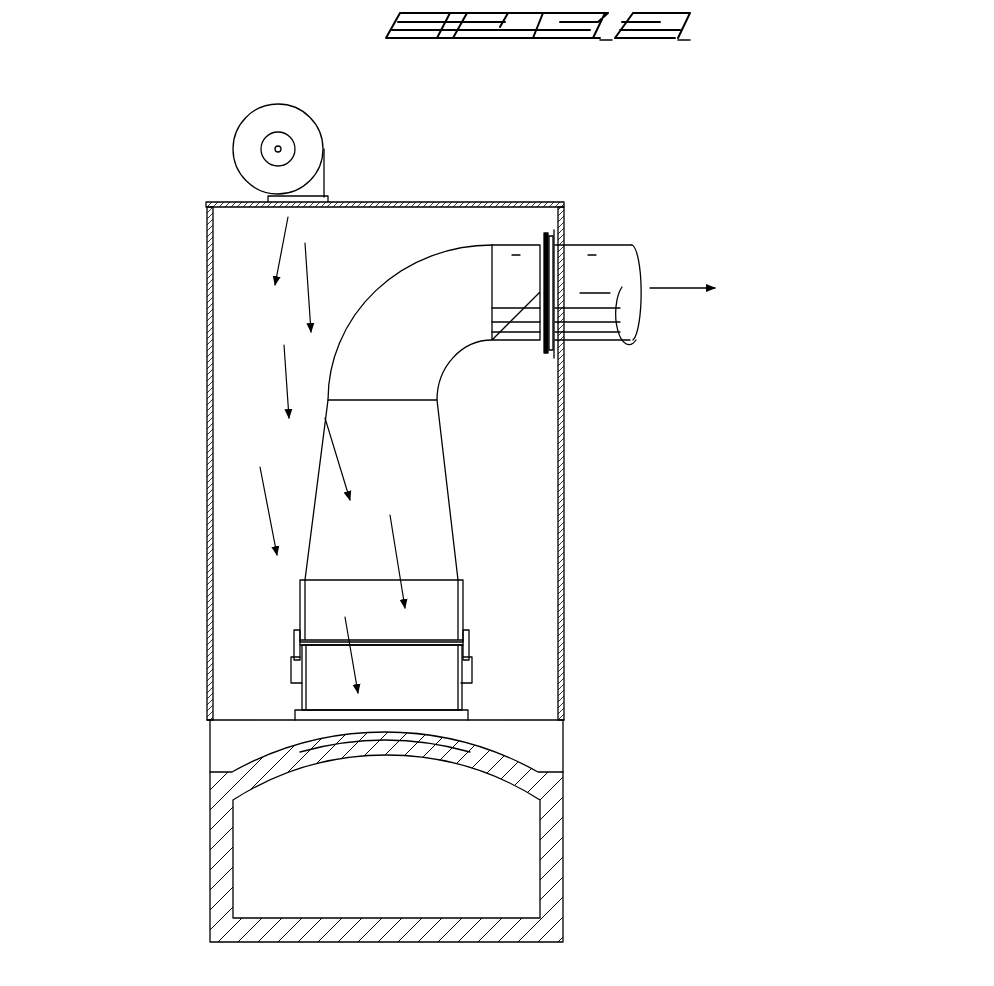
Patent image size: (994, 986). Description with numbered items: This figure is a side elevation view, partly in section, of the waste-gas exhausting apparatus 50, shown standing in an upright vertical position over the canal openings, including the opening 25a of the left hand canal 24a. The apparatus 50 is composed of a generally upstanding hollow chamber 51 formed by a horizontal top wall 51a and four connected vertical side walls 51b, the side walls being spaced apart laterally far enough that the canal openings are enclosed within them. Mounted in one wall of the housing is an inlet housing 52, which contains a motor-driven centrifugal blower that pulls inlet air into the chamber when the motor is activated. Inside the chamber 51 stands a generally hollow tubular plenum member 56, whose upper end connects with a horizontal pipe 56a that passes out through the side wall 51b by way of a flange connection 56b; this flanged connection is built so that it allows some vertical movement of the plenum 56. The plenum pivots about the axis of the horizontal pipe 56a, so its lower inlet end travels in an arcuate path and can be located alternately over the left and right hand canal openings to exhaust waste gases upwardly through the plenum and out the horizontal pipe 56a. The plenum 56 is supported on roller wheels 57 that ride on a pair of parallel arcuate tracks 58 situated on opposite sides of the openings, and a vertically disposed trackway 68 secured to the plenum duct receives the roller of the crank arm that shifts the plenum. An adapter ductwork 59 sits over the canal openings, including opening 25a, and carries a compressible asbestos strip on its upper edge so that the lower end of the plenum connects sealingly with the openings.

The apparatus 50 is at (172, 377).
The hollow chamber 51 is at (208, 485).
The horizontal top wall 51a is at (520, 179).
The vertical side walls 51b is at (207, 282).
The inlet housing 52 is at (327, 87).
The tubular plenum member 56 is at (445, 443).
The horizontal pipe 56a is at (590, 251).
The flange connection 56b is at (560, 336).
The roller wheels 57 is at (294, 641).
The arcuate tracks 58 is at (292, 661).
The adapter ductwork 59 is at (466, 698).
The trackway 68 is at (466, 594).
The opening of left hand canal 25a is at (414, 727).
The left hand canal 24a is at (525, 856).